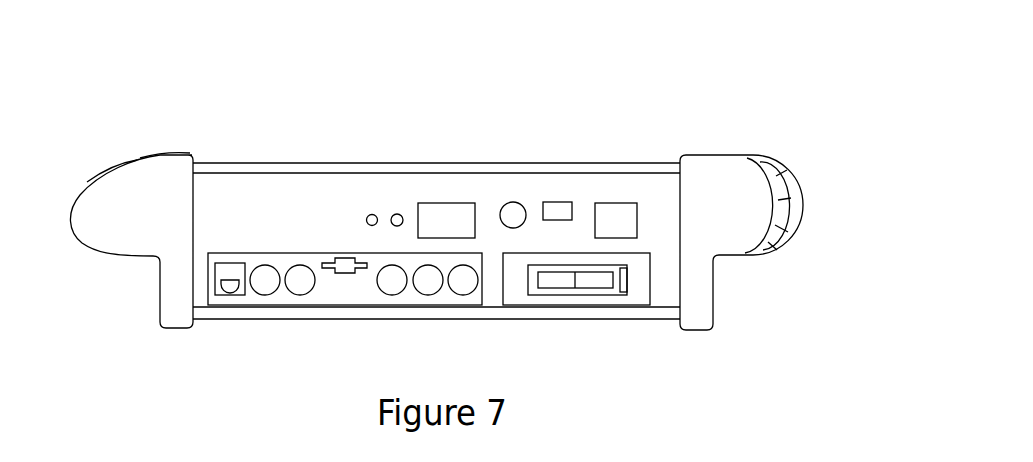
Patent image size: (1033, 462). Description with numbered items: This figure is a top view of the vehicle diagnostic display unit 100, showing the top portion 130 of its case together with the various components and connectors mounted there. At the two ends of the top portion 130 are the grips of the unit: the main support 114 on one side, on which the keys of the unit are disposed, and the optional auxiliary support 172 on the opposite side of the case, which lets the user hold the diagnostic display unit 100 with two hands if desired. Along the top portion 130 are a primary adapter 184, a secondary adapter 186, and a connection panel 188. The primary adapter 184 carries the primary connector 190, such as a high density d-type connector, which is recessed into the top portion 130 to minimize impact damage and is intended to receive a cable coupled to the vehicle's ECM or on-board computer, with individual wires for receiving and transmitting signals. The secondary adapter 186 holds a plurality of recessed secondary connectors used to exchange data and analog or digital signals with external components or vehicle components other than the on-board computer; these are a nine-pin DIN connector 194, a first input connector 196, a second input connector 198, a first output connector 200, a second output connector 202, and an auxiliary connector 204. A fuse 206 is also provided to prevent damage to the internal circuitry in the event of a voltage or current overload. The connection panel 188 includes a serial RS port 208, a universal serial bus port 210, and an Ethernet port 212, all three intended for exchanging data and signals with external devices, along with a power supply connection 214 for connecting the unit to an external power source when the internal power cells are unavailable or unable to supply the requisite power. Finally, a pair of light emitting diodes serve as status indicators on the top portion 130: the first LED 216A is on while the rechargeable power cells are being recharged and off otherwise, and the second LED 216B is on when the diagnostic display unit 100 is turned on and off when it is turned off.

The vehicle diagnostic display unit 100 is at (647, 57).
The main support 114 is at (95, 198).
The auxiliary support 172 is at (732, 168).
The top portion 130 is at (272, 197).
The primary adapter 184 is at (645, 307).
The secondary adapter 186 is at (258, 306).
The connection panel 188 is at (532, 192).
The primary connector 190 is at (614, 294).
The DIN-9 connector 194 is at (223, 265).
The first input connector 196 is at (268, 266).
The second input connector 198 is at (305, 265).
The first output connector 200 is at (392, 296).
The second output connector 202 is at (428, 296).
The auxiliary connector 204 is at (464, 296).
The fuse 206 is at (345, 274).
The RS-232 port 208 is at (445, 202).
The universal serial bus (USB) port 210 is at (562, 201).
The Ethernet port 212 is at (610, 202).
The power supply connection 214 is at (508, 203).
The first LED 216A is at (370, 214).
The second LED 216B is at (397, 213).